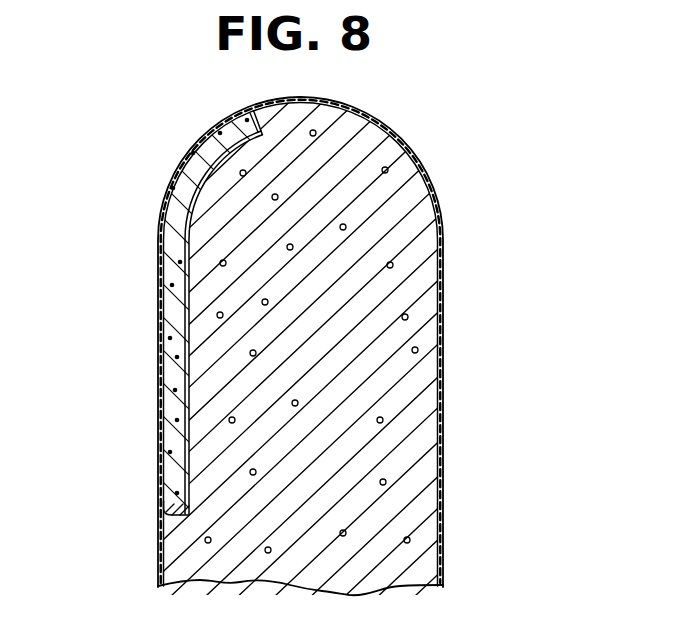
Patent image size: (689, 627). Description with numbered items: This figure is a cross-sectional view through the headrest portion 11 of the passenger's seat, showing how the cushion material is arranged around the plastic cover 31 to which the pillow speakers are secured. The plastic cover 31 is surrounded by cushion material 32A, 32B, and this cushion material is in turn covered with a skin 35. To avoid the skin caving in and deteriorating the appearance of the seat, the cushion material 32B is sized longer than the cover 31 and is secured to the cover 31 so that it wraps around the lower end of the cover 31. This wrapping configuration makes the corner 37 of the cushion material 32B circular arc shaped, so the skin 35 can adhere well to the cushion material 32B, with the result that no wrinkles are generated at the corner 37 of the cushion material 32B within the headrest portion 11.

The headrest portion 11 is at (450, 185).
The plastic cover 31 is at (160, 364).
The cushion material 32A is at (371, 368).
The cushion material 32B is at (162, 247).
The skin 35 is at (185, 150).
The corner 37 is at (158, 507).